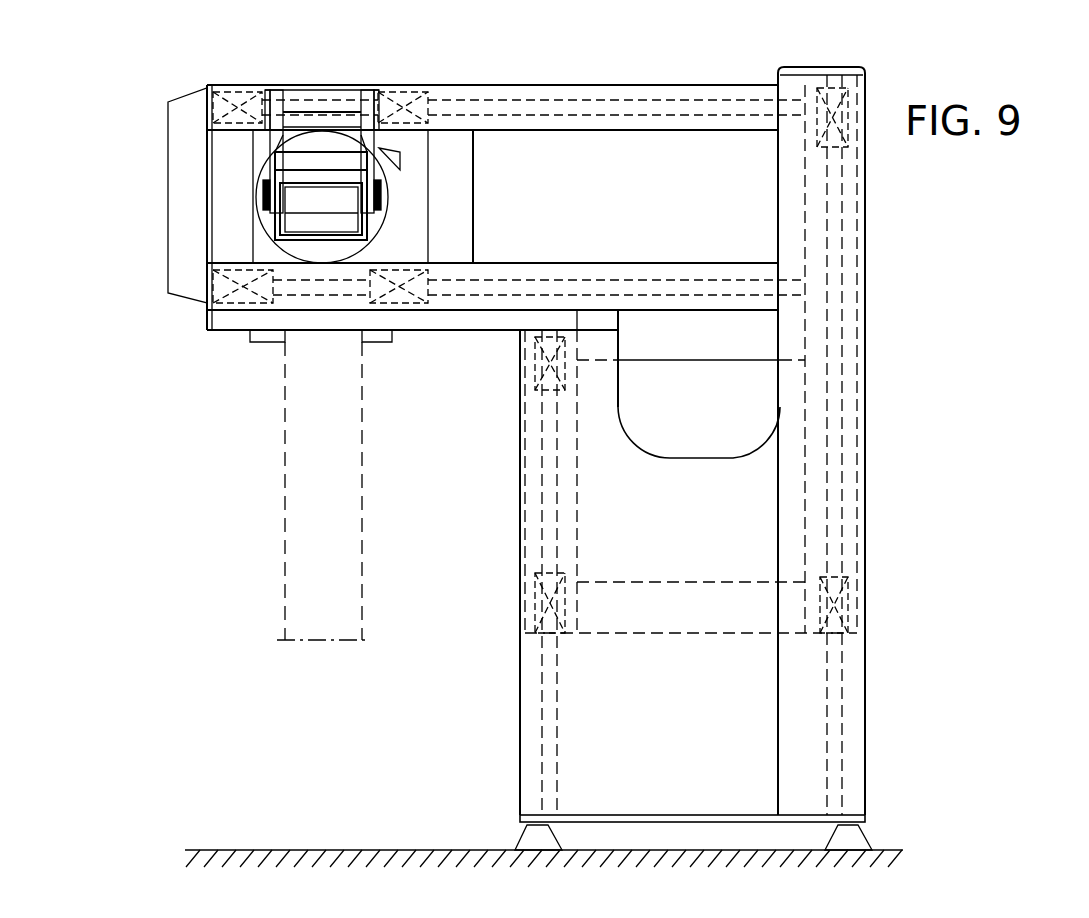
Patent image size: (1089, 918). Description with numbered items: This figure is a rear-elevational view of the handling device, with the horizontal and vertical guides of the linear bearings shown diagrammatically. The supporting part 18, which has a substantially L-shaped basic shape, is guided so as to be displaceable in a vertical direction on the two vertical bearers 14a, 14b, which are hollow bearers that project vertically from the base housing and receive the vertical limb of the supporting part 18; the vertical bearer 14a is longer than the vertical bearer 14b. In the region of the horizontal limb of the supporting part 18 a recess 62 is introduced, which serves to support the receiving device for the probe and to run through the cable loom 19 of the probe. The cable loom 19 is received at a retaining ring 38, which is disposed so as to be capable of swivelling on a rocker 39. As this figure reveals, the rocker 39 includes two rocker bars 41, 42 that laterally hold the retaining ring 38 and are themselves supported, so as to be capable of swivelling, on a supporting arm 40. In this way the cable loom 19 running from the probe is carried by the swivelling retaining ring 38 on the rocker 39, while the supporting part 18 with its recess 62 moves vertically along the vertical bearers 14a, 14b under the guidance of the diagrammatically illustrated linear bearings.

The supporting part 18 is at (556, 82).
The recess 62 is at (642, 155).
The rocker 39 is at (257, 118).
The supporting arm 40 is at (323, 100).
The rocker bar 42 is at (270, 151).
The retaining ring 38 is at (275, 221).
The rocker bar 41 is at (380, 152).
The cable loom 19 is at (348, 488).
The vertical bearer 14b is at (520, 384).
The vertical bearer 14a is at (865, 385).